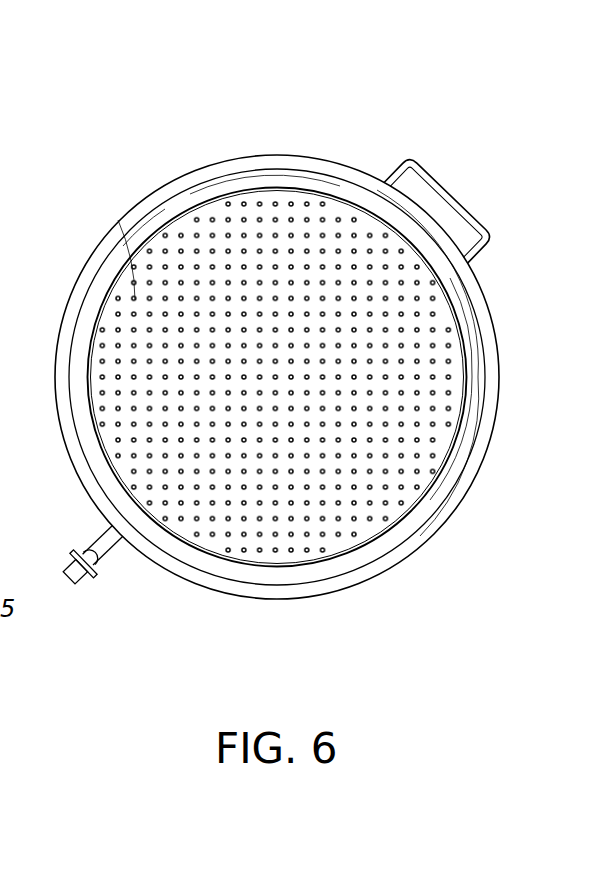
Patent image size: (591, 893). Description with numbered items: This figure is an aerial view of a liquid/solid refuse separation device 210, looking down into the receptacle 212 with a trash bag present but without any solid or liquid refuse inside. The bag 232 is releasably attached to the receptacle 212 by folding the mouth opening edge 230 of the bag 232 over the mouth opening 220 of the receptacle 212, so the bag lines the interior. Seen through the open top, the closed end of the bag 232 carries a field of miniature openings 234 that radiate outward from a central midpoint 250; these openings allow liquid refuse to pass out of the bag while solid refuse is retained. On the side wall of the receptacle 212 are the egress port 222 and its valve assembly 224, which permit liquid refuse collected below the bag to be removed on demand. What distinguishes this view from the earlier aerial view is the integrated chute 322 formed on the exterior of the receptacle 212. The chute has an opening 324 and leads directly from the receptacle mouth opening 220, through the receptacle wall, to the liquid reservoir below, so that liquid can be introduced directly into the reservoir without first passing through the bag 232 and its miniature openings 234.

The liquid/solid refuse separation device 210 is at (147, 112).
The receptacle 212 is at (222, 178).
The mouth opening 220 is at (420, 505).
The egress port 222 is at (63, 587).
The valve assembly 224 is at (78, 557).
The mouth opening edge 230 is at (104, 237).
The bag 232 is at (213, 543).
The miniature openings 234 is at (377, 302).
The central midpoint 250 is at (272, 376).
The integrated chute 322 is at (410, 158).
The opening 324 is at (450, 218).